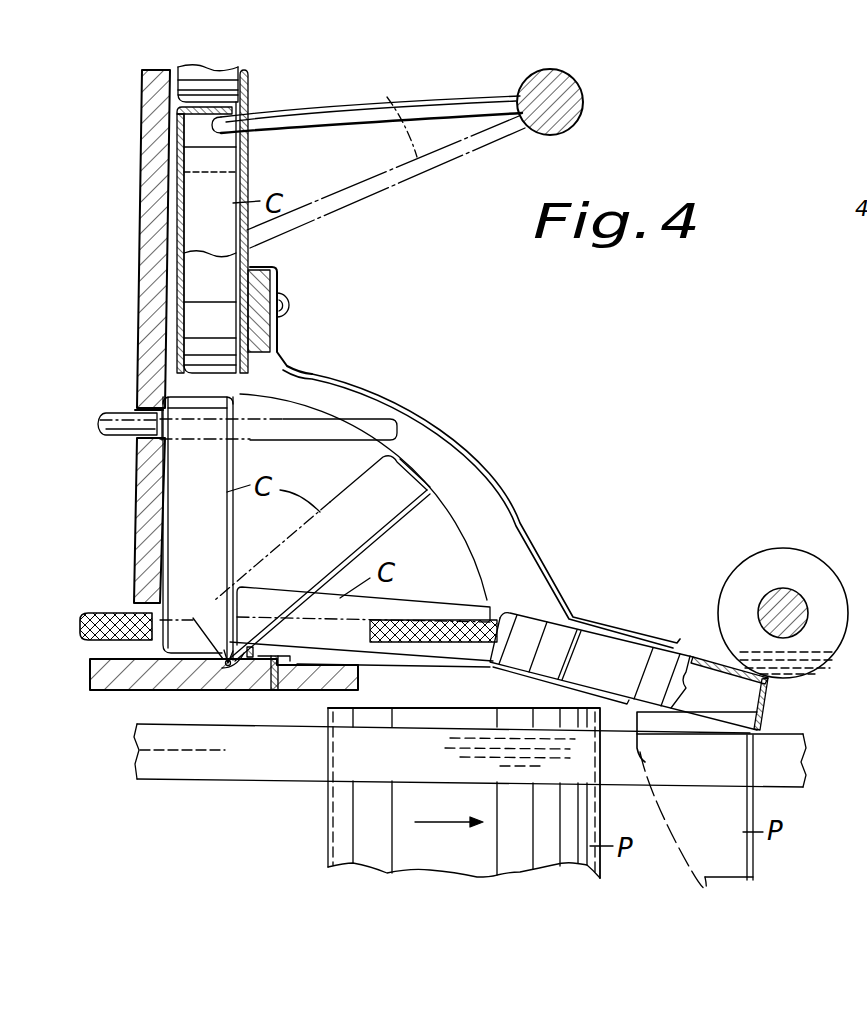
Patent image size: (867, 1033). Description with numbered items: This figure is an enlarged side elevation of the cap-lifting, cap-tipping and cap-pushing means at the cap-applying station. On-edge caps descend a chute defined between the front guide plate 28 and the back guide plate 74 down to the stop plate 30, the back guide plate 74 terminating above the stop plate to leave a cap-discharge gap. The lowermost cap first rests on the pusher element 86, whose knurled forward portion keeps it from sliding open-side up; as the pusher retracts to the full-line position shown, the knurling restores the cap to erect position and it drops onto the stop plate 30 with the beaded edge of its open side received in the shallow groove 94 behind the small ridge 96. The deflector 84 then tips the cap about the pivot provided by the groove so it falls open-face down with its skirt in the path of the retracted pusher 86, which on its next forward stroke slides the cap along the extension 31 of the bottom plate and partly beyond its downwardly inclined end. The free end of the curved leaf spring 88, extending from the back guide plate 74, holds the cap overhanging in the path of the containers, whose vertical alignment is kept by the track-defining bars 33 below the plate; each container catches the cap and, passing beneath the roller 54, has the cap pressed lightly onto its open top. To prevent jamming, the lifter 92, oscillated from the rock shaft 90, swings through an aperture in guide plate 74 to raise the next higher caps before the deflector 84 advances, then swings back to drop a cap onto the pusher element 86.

The front guide plate 28 is at (150, 200).
The back guide plate 74 is at (250, 178).
The lifter 92 is at (348, 110).
The rock shaft 90 is at (585, 101).
The deflector 84 is at (108, 412).
The curved leaf spring 88 is at (418, 412).
The pusher element 86 is at (112, 611).
The extension of the bottom plate 31 is at (402, 664).
The shallow groove 94 is at (245, 664).
The small ridge 96 is at (266, 673).
The stop plate 30 is at (112, 691).
The roller 54 is at (767, 562).
The track-defining bars 33 is at (786, 745).